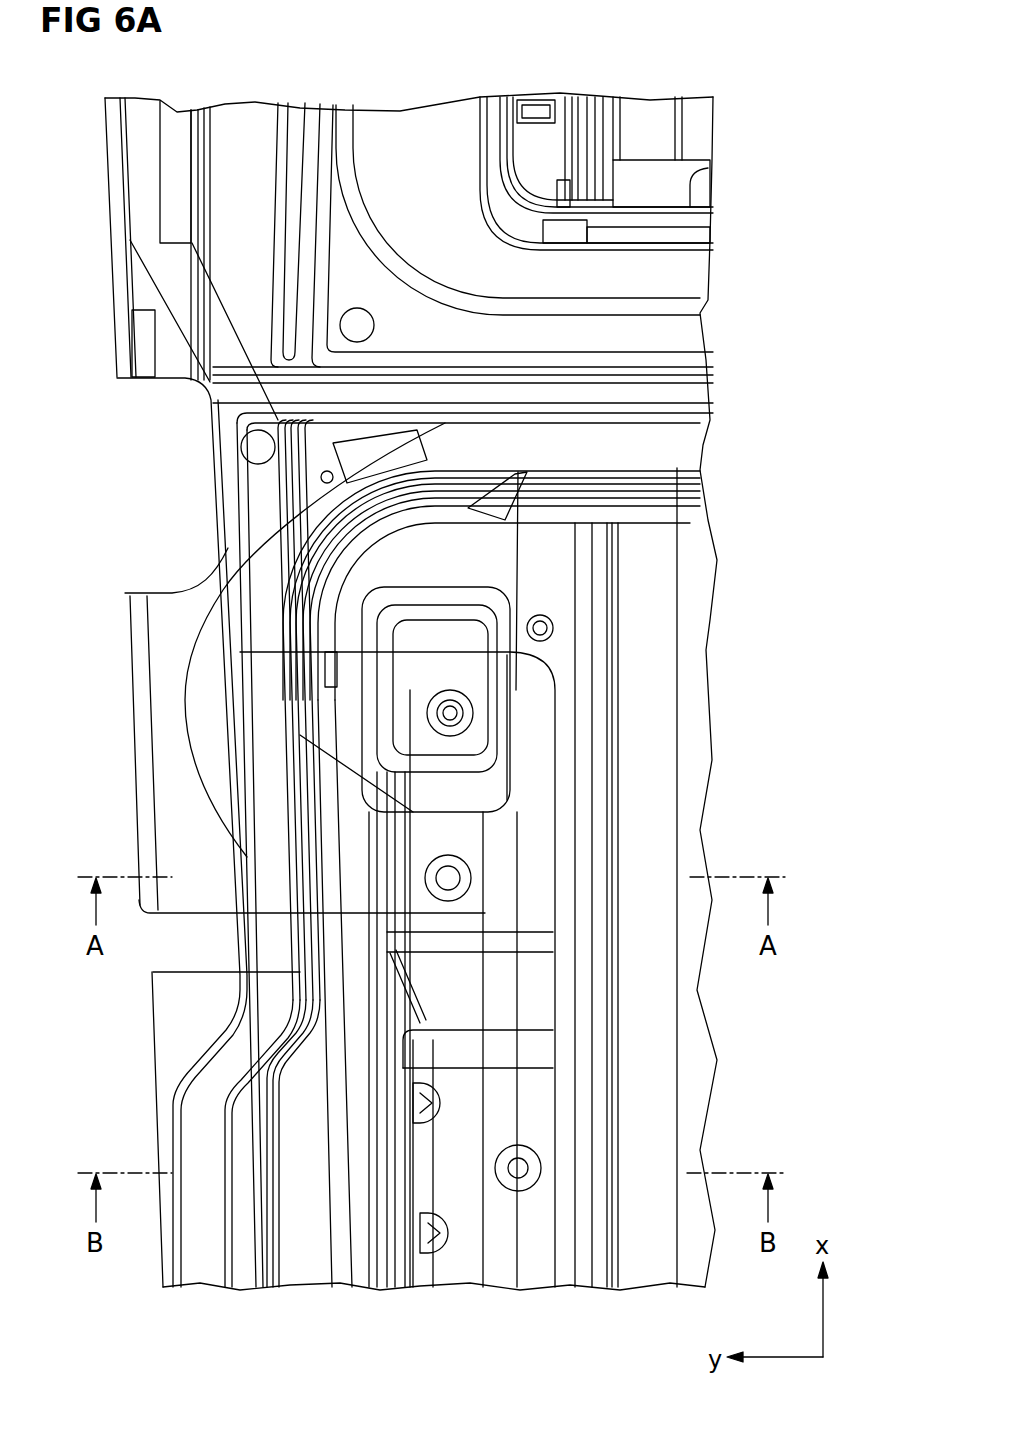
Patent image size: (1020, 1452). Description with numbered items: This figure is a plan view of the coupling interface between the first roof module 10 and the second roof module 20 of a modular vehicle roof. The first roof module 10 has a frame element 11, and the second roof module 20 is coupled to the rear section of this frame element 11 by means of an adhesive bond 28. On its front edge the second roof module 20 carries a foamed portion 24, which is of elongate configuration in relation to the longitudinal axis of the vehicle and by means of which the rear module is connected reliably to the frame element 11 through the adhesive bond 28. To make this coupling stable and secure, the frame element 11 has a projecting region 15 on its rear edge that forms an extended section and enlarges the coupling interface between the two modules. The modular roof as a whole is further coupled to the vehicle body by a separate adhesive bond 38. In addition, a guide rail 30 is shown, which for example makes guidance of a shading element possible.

The first roof module 10 is at (770, 100).
The frame element 11 is at (125, 289).
The projecting region 15 is at (172, 782).
The second roof module 20 is at (745, 680).
The foamed portion 24 is at (300, 1117).
The adhesive bond 28 is at (657, 442).
The guide rail 30 is at (650, 1038).
The separate adhesive bond 38 is at (200, 690).